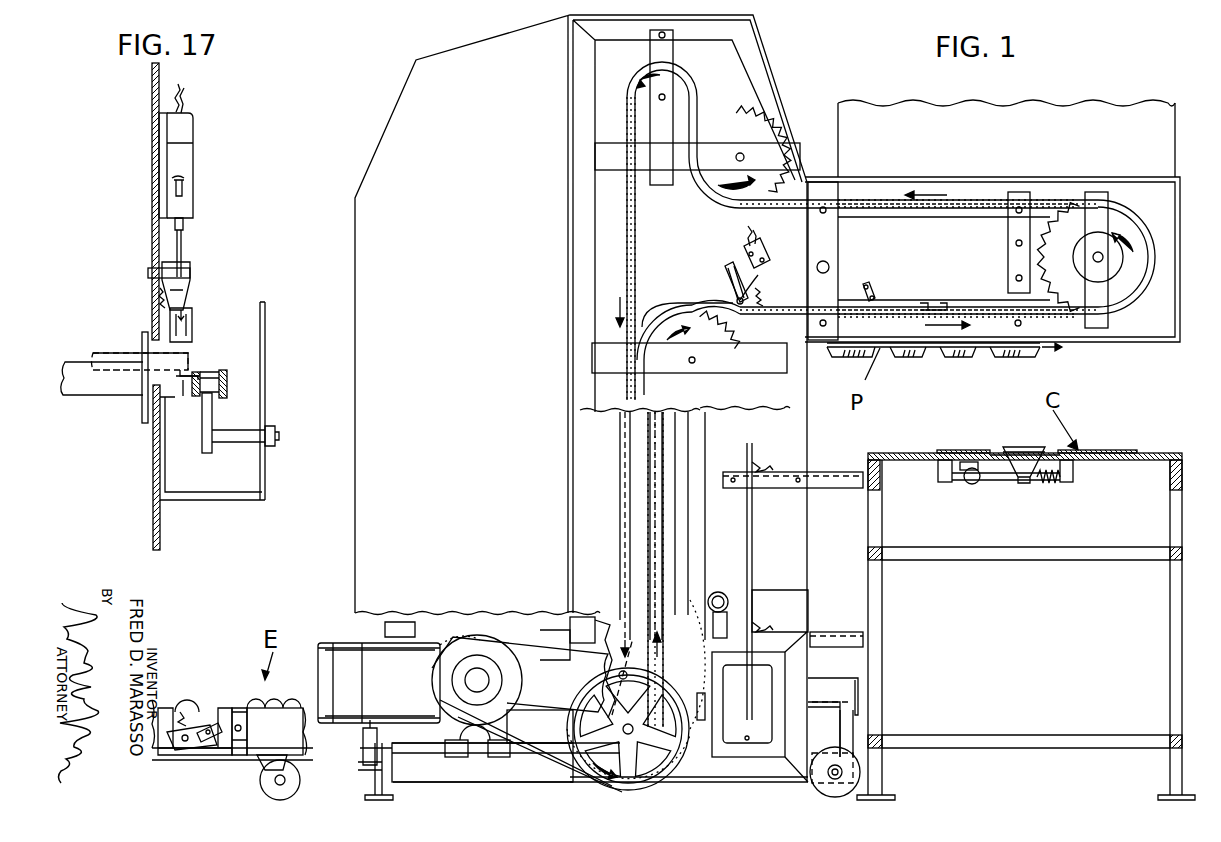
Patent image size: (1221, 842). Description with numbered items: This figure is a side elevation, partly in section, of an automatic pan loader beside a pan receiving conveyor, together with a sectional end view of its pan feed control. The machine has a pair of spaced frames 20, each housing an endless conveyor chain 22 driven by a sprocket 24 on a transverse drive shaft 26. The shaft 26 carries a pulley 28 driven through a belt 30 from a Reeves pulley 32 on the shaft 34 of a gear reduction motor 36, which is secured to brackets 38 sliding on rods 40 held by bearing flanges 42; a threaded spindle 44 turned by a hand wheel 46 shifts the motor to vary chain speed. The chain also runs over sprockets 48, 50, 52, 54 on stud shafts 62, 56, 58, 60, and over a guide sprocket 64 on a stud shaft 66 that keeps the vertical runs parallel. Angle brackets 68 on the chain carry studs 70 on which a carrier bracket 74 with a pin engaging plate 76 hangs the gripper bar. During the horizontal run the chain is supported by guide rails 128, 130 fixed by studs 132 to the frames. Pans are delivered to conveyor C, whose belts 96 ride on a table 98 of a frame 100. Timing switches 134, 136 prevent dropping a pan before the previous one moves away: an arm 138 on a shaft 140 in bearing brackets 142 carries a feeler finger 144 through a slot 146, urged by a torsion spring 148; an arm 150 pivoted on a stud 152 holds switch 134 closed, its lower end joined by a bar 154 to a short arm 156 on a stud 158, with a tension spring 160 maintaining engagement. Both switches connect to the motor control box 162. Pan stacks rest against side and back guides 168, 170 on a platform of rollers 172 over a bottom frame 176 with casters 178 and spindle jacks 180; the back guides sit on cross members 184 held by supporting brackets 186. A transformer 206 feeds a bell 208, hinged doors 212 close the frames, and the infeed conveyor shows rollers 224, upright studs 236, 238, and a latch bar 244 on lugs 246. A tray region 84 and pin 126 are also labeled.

In FIG. 17, the frame 20 is at (266, 340).
In FIG. 1, the frame 20 is at (580, 257).
In FIG. 17, the endless conveyor chain 22 is at (220, 398).
In FIG. 1, the endless conveyor chain 22 is at (637, 225).
In FIG. 1, the sprocket 24 is at (620, 712).
In FIG. 1, the drive shaft 26 is at (572, 729).
In FIG. 1, the pulley 28 is at (647, 777).
In FIG. 1, the belt 30 is at (563, 770).
In FIG. 1, the Reeves pulley 32 is at (502, 695).
In FIG. 1, the shaft 34 is at (477, 680).
In FIG. 1, the gear reduction motor 36 is at (370, 640).
In FIG. 1, the motor bracket 38 is at (456, 757).
In FIG. 1, the rod 40 is at (427, 750).
In FIG. 1, the bearing flange 42 is at (393, 747).
In FIG. 1, the threaded spindle 44 is at (370, 728).
In FIG. 1, the hand wheel 46 is at (363, 768).
In FIG. 1, the sprocket 48 is at (682, 87).
In FIG. 1, the sprocket 50 is at (717, 337).
In FIG. 1, the sprocket 52 is at (1140, 243).
In FIG. 1, the sprocket 54 is at (763, 128).
In FIG. 1, the stud shaft 56 is at (689, 360).
In FIG. 1, the stud shaft 58 is at (1103, 260).
In FIG. 1, the stud shaft 60 is at (745, 157).
In FIG. 1, the stud shaft 62 is at (665, 97).
In FIG. 1, the guide sprocket 64 is at (620, 663).
In FIG. 1, the stud shaft 66 is at (520, 674).
In FIG. 17, the angle bracket 68 is at (184, 392).
In FIG. 17, the stud 70 is at (140, 353).
In FIG. 17, the carrier bracket 74 is at (108, 396).
In FIG. 17, the pin engaging plate 76 is at (143, 335).
In FIG. 1, the trays 84 is at (940, 348).
In FIG. 1, the conveyor belt 96 is at (952, 452).
In FIG. 1, the table 98 is at (1172, 452).
In FIG. 1, the frame 100 is at (1170, 620).
In FIG. 1, the pivot pin 126 is at (828, 265).
In FIG. 17, the guide rail 128 is at (200, 440).
In FIG. 1, the guide rail 128 is at (1073, 323).
In FIG. 1, the guide rail 130 is at (932, 212).
In FIG. 17, the stud 132 is at (250, 445).
In FIG. 17, the switch 134 is at (182, 158).
In FIG. 1, the switch 134 is at (755, 246).
In FIG. 1, the switch 136 is at (980, 470).
In FIG. 1, the arm 138 is at (965, 483).
In FIG. 1, the shaft 140 is at (990, 478).
In FIG. 1, the bearing bracket 142 is at (938, 480).
In FIG. 1, the feeler finger 144 is at (1008, 452).
In FIG. 1, the slot 146 is at (1057, 436).
In FIG. 1, the torsion spring 148 is at (1040, 480).
In FIG. 17, the arm 150 is at (183, 238).
In FIG. 1, the arm 150 is at (728, 268).
In FIG. 17, the stud 152 is at (178, 273).
In FIG. 1, the stud 152 is at (730, 292).
In FIG. 17, the bar 154 is at (183, 318).
In FIG. 1, the bar 154 is at (758, 275).
In FIG. 1, the short arm 156 is at (875, 298).
In FIG. 1, the stud 158 is at (872, 290).
In FIG. 17, the tension spring 160 is at (160, 300).
In FIG. 1, the tension spring 160 is at (763, 290).
In FIG. 1, the motor control box 162 is at (763, 682).
In FIG. 1, the side guide 168 is at (704, 415).
In FIG. 1, the back guide 170 is at (747, 450).
In FIG. 1, the roller 172 is at (307, 710).
In FIG. 1, the bottom frame 176 is at (493, 780).
In FIG. 1, the caster 178 is at (262, 788).
In FIG. 1, the spindle jack 180 is at (362, 790).
In FIG. 1, the cross member 184 is at (767, 467).
In FIG. 1, the supporting bracket 186 is at (853, 472).
In FIG. 1, the transformer 206 is at (705, 708).
In FIG. 1, the bell 208 is at (720, 592).
In FIG. 1, the hinged door 212 is at (1070, 118).
In FIG. 1, the roller 224 is at (185, 700).
In FIG. 1, the upright stud 236 is at (158, 703).
In FIG. 1, the upright stud 238 is at (247, 710).
In FIG. 1, the latch bar 244 is at (208, 728).
In FIG. 1, the lug 246 is at (197, 748).